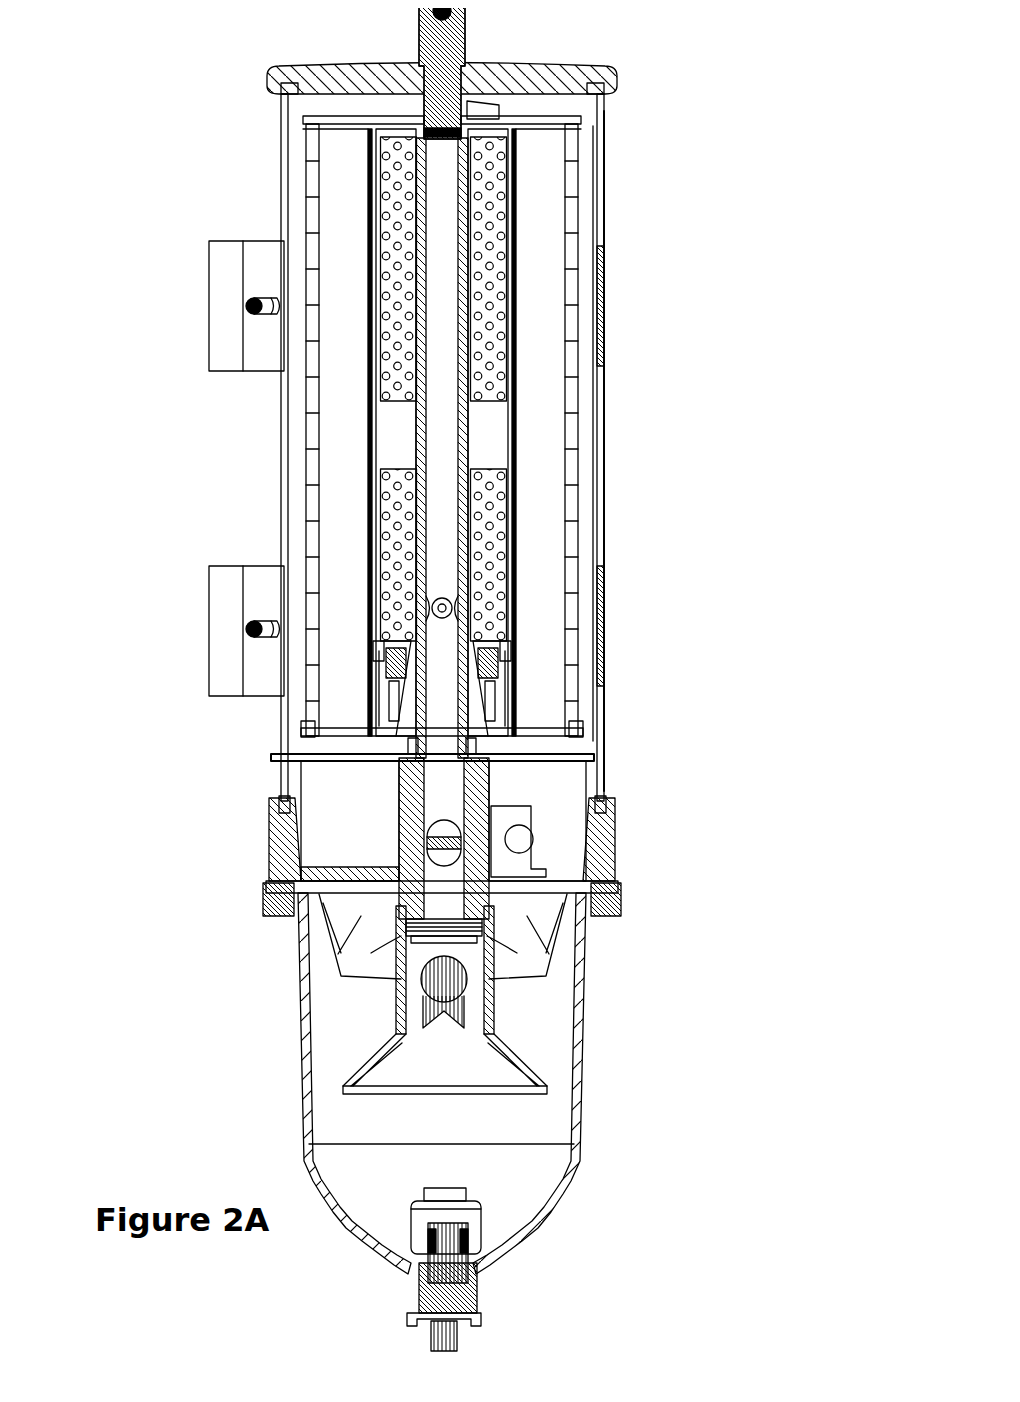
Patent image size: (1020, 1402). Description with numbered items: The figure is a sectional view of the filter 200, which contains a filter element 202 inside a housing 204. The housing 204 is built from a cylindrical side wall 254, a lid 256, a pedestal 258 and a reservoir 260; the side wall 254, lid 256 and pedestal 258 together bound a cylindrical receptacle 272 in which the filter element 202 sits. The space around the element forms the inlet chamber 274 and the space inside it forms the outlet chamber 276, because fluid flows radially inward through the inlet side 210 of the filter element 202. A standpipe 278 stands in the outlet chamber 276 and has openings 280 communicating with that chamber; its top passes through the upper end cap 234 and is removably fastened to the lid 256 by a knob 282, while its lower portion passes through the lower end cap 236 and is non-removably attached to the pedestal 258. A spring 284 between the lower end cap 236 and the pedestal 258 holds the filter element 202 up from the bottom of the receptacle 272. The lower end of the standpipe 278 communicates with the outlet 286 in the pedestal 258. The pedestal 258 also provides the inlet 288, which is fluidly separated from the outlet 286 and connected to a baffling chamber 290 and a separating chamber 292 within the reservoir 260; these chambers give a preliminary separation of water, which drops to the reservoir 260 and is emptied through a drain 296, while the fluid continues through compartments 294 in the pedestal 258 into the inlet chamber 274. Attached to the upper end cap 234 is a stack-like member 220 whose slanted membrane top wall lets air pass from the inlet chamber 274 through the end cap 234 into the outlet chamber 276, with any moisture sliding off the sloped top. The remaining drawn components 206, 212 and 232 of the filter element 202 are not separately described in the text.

The filter 200 is at (712, 372).
The filter element 202 is at (592, 380).
The housing 204 is at (614, 434).
The filter media 206 is at (540, 290).
The inlet side 210 is at (572, 497).
The perforated inner tube 212 is at (383, 472).
The member 220 is at (490, 108).
The perforated tube lower portion 232 is at (548, 583).
The upper end cap 234 is at (560, 117).
The lower end cap 236 is at (560, 741).
The cylindrical side wall 254 is at (597, 187).
The lid 256 is at (343, 64).
The pedestal 258 is at (603, 828).
The reservoir 260 is at (582, 1040).
The cylindrical receptacle 272 is at (580, 245).
The inlet chamber 274 is at (587, 468).
The outlet chamber 276 is at (487, 153).
The standpipe 278 is at (417, 407).
The openings 280 is at (433, 607).
The knob 282 is at (452, 40).
The spring 284 is at (415, 745).
The outlet 286 is at (449, 820).
The inlet 288 is at (462, 852).
The baffling chamber 290 is at (473, 998).
The separating chamber 292 is at (320, 953).
The compartments 294 is at (560, 840).
The drain 296 is at (478, 1290).